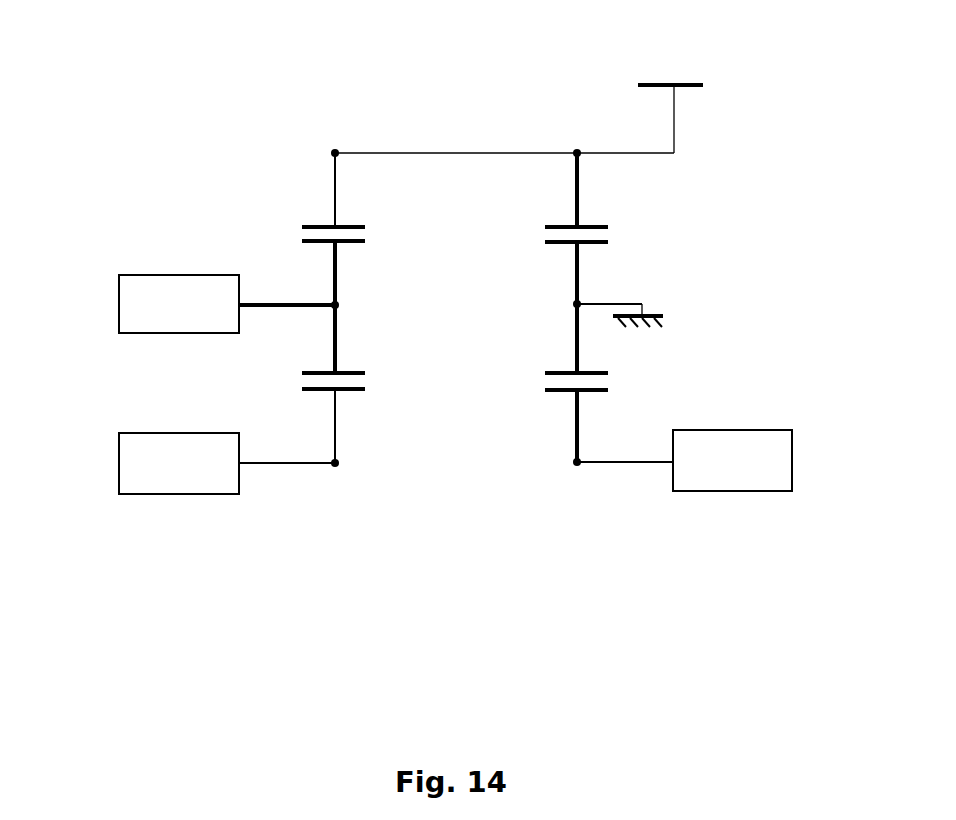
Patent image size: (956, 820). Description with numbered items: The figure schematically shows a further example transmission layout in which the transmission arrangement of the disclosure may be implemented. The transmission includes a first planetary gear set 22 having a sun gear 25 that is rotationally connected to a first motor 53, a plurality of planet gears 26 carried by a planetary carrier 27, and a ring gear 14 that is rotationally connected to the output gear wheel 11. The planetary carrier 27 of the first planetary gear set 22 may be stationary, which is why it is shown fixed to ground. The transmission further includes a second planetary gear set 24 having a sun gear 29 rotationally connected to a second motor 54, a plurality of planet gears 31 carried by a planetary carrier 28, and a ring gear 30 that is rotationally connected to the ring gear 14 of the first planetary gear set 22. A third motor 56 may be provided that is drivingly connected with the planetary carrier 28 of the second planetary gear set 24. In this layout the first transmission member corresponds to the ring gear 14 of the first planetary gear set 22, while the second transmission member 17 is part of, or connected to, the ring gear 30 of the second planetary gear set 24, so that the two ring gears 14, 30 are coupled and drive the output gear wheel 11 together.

The output gear wheel 11 is at (677, 130).
The ring gear 14 is at (577, 188).
The second transmission member 17 is at (470, 153).
The first planetary gear set 22 is at (594, 522).
The second planetary gear set 24 is at (337, 512).
The sun gear 25 is at (577, 427).
The planet gear 26 is at (577, 275).
The planetary carrier 27 is at (608, 290).
The planetary carrier 28 is at (265, 305).
The sun gear 29 is at (335, 418).
The ring gear 30 is at (335, 200).
The planet gear 31 is at (335, 277).
The first motor 53 is at (728, 463).
The second motor 54 is at (215, 462).
The third motor 56 is at (165, 295).